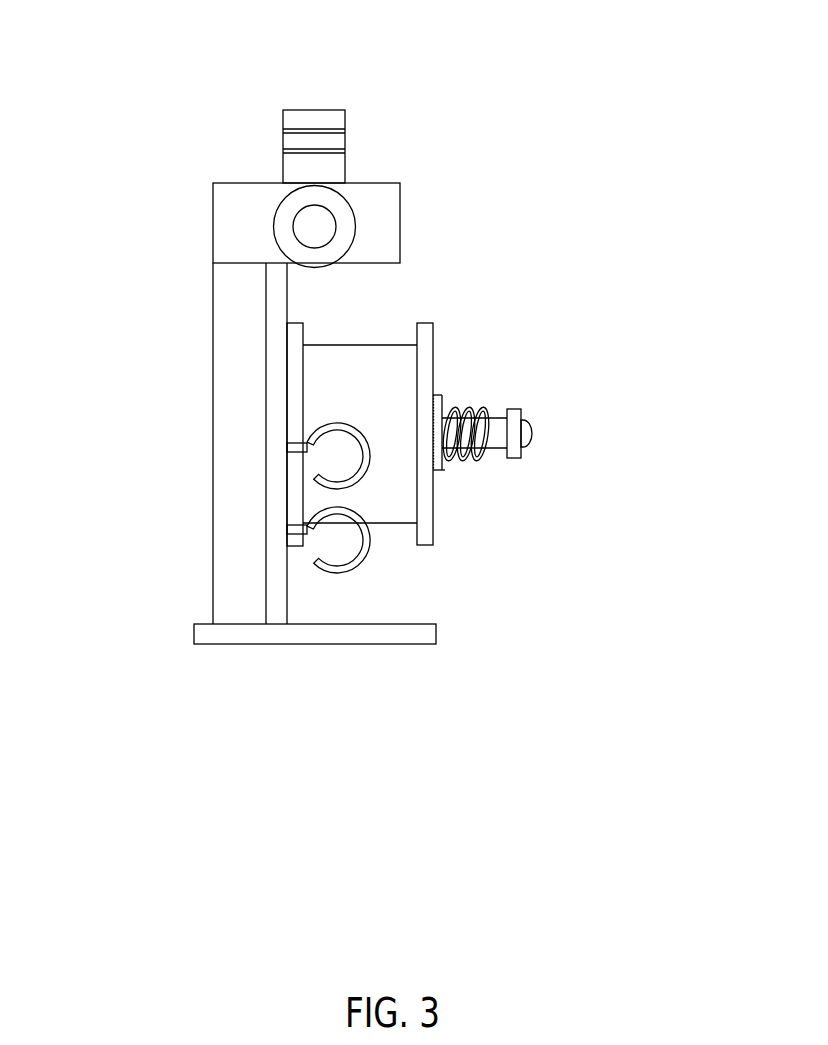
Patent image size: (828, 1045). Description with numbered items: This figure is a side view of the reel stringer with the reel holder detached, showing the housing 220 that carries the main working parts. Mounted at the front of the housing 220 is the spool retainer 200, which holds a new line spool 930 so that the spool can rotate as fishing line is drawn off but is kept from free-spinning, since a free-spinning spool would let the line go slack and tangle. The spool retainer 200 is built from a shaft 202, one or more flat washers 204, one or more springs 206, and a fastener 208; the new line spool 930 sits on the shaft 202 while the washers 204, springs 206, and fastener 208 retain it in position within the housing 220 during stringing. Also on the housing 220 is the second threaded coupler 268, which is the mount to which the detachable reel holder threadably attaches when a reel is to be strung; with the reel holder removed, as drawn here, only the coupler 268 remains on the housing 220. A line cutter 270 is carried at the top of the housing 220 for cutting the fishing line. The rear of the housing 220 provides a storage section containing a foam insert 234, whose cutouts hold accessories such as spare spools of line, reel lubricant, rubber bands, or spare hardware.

The spool retainer 200 is at (553, 447).
The shaft 202 is at (529, 435).
The flat washer 204 is at (441, 470).
The spring 206 is at (458, 412).
The fastener 208 is at (514, 409).
The housing 220 is at (229, 230).
The foam insert 234 is at (225, 533).
The second threaded coupler 268 is at (353, 210).
The line cutter 270 is at (319, 114).
The new line spool 930 is at (427, 328).